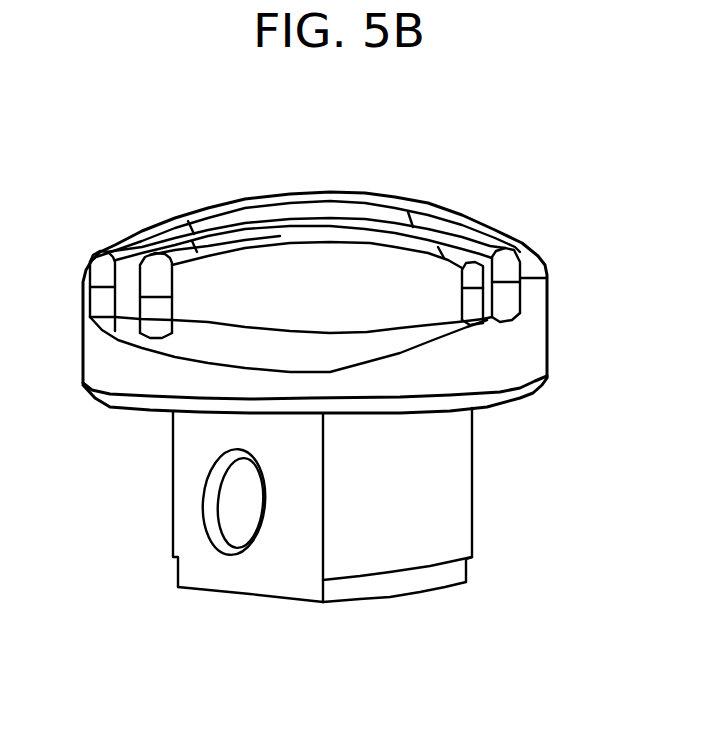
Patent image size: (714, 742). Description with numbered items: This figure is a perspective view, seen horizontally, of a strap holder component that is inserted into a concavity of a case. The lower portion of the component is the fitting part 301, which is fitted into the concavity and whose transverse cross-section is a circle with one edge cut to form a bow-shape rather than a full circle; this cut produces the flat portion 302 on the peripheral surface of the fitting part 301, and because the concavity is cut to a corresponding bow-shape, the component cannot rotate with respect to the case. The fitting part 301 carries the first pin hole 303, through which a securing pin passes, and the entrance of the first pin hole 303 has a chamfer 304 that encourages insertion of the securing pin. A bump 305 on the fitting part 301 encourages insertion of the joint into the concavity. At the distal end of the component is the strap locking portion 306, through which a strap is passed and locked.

The fitting part 301 is at (428, 510).
The flat portion 302 is at (283, 548).
The first pin hole 303 is at (240, 500).
The chamfer 304 is at (210, 533).
The bump 305 is at (427, 580).
The strap locking portion 306 is at (265, 237).